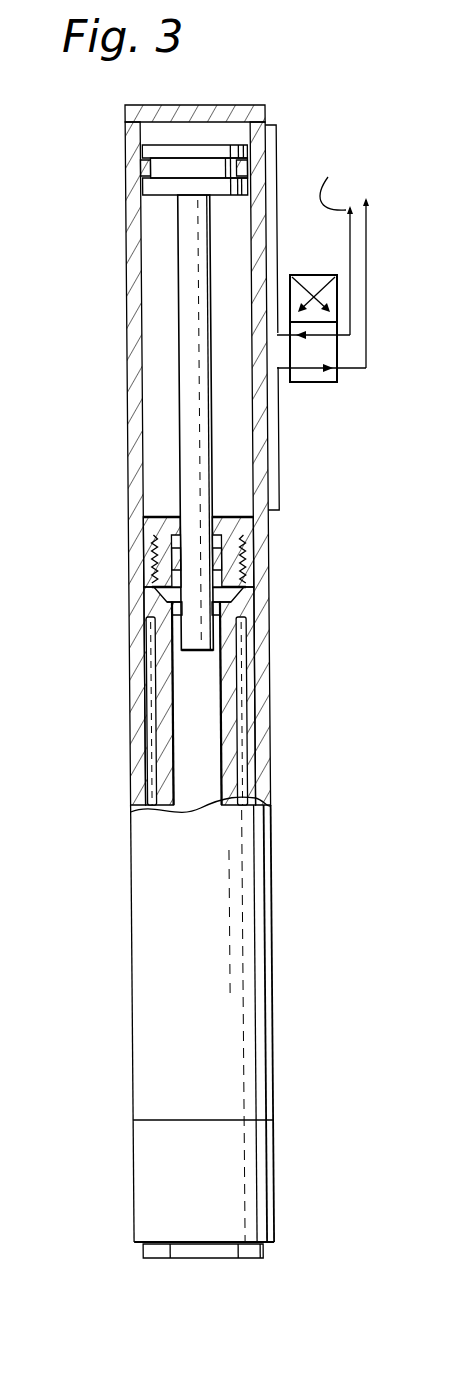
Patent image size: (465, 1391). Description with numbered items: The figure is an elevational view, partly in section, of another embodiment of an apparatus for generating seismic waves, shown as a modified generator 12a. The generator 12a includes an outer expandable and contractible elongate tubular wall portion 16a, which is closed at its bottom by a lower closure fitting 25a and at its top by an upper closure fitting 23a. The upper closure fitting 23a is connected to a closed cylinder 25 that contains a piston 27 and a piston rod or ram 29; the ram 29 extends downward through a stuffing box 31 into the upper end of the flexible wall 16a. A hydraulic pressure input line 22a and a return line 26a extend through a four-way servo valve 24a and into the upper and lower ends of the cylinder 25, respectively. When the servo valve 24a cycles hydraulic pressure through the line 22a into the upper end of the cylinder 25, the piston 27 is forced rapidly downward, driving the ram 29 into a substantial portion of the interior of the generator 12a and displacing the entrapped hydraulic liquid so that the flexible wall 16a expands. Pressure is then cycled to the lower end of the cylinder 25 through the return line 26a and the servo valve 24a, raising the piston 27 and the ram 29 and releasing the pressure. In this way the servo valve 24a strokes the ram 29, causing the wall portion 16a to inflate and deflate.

The closed cylinder 25 is at (135, 447).
The piston 27 is at (163, 188).
The piston rod or ram 29 is at (190, 340).
The generator 12a is at (272, 591).
The stuffing box 31 is at (232, 570).
The upper closure fitting 23a is at (257, 628).
The outer expandable and contractible elongate tubular wall portion 16a is at (262, 768).
The lower closure fitting 25a is at (274, 1178).
The return line 26a is at (366, 233).
The hydraulic pressure input line 22a is at (278, 155).
The four-way servo valve 24a is at (317, 383).